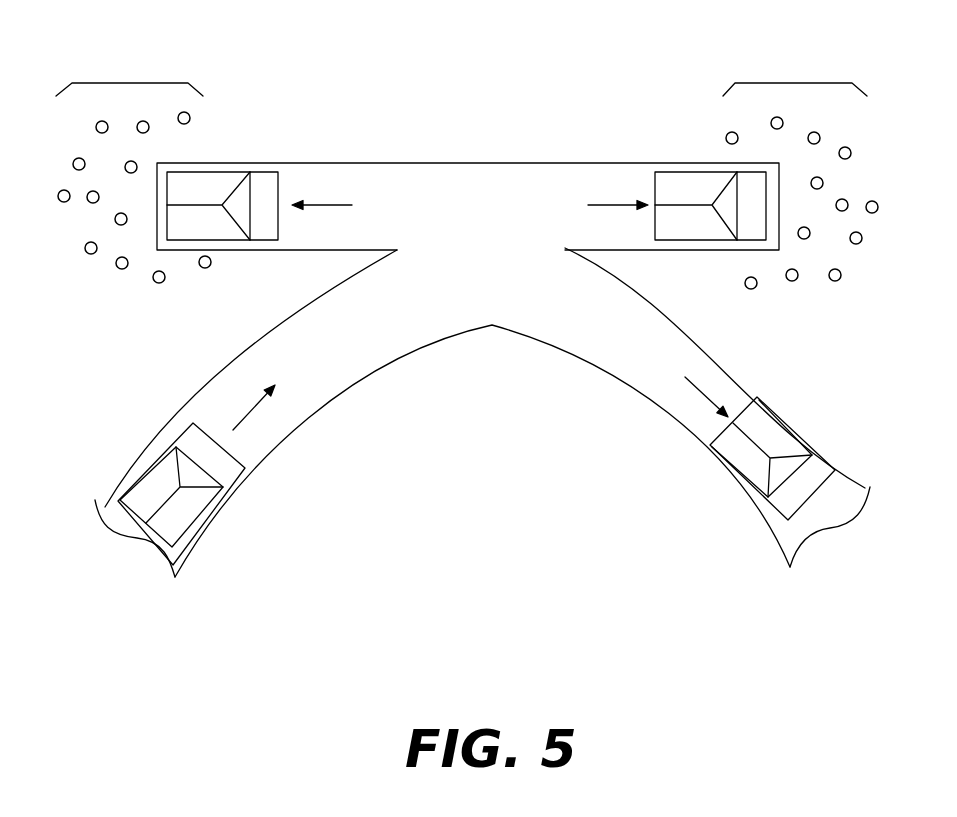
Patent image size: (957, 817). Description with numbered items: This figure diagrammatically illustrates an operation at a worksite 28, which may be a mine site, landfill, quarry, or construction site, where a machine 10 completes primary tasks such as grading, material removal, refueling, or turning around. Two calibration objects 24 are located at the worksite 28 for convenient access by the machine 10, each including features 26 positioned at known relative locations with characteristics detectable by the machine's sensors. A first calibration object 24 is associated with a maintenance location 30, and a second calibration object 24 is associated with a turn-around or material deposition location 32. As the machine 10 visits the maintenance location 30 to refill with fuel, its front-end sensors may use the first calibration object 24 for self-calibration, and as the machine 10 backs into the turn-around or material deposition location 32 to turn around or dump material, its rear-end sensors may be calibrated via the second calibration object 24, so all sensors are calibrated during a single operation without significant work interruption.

The machine 10 is at (264, 190).
The calibration object 24 is at (125, 83).
The features 26 is at (85, 248).
The worksite 28 is at (480, 563).
The maintenance location 30 is at (868, 176).
The turn-around or material deposition location 32 is at (80, 289).